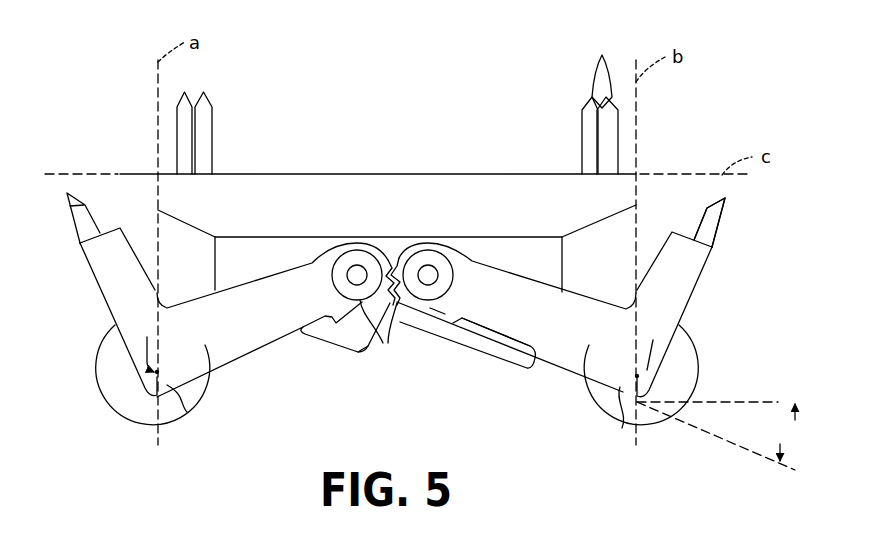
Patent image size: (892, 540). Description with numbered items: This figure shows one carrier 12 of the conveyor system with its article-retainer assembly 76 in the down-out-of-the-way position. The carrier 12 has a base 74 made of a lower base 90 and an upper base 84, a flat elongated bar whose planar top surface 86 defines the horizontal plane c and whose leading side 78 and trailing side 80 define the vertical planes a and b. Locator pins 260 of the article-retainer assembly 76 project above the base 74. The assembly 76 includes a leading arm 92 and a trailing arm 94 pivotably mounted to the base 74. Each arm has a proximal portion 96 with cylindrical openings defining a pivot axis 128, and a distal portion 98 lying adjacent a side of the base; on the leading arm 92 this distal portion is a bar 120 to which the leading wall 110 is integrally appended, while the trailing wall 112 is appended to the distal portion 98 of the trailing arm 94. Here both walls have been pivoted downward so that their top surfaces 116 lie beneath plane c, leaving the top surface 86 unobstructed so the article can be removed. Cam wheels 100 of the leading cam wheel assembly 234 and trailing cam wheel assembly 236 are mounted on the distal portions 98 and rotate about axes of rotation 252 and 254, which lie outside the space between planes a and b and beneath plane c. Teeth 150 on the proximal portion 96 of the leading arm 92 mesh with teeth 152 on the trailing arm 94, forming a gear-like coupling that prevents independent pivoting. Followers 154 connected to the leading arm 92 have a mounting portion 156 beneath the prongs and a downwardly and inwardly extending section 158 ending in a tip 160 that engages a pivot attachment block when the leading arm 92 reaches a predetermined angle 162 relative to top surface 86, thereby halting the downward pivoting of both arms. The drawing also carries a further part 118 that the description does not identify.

The carrier 12 is at (722, 88).
The base 74 is at (392, 150).
The article-retainer assembly 76 is at (143, 441).
The leading side 78 is at (637, 183).
The trailing side 80 is at (155, 182).
The upper base 84 is at (435, 195).
The top surface 86 is at (488, 172).
The lower base 90 is at (548, 257).
The leading arm 92 is at (572, 365).
The trailing arm 94 is at (252, 356).
The proximal portion 96 is at (383, 346).
The distal portion 98 is at (187, 412).
The cam wheel 100 is at (105, 368).
The leading wall 110 is at (690, 268).
The trailing wall 112 is at (87, 262).
The top surface 116 is at (105, 228).
The left guide 118 is at (205, 295).
The bar 120 is at (160, 372).
The pivot axis 128 is at (346, 279).
The teeth 150 is at (405, 255).
The teeth 152 is at (390, 253).
The follower 154 is at (445, 365).
The mounting portion 156 is at (515, 368).
The downwardly and inwardly extending section 158 is at (360, 352).
The tip 160 is at (300, 325).
The predetermined angle 162 is at (724, 436).
The leading cam wheel assembly 234 is at (655, 445).
The trailing cam wheel assembly 236 is at (98, 417).
The axis of rotation 252 is at (657, 341).
The axis of rotation 254 is at (135, 339).
The locator pins 260 is at (602, 55).